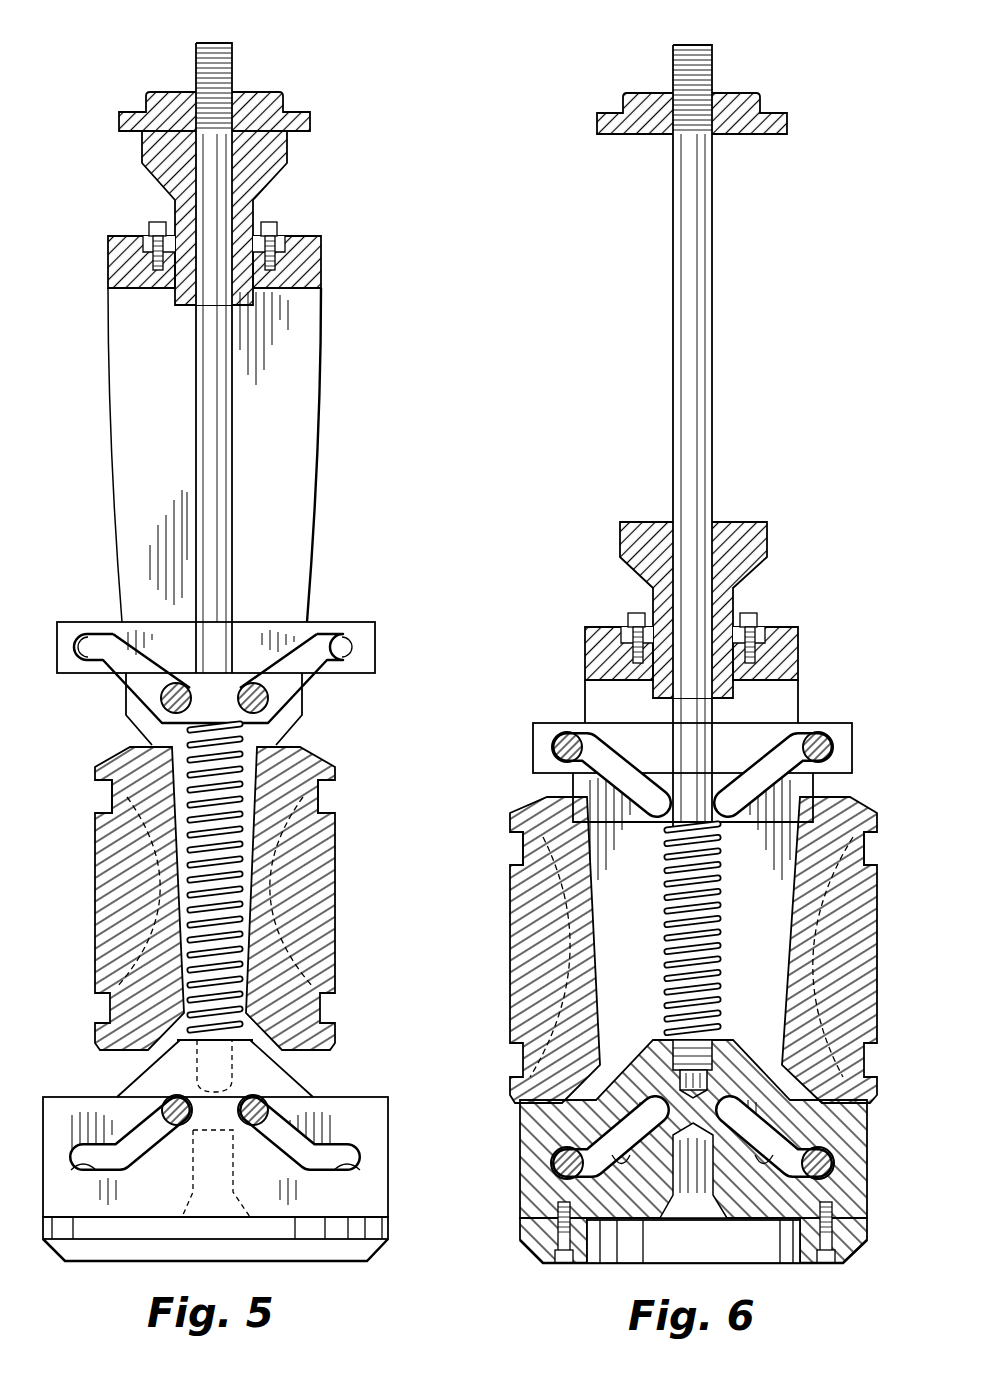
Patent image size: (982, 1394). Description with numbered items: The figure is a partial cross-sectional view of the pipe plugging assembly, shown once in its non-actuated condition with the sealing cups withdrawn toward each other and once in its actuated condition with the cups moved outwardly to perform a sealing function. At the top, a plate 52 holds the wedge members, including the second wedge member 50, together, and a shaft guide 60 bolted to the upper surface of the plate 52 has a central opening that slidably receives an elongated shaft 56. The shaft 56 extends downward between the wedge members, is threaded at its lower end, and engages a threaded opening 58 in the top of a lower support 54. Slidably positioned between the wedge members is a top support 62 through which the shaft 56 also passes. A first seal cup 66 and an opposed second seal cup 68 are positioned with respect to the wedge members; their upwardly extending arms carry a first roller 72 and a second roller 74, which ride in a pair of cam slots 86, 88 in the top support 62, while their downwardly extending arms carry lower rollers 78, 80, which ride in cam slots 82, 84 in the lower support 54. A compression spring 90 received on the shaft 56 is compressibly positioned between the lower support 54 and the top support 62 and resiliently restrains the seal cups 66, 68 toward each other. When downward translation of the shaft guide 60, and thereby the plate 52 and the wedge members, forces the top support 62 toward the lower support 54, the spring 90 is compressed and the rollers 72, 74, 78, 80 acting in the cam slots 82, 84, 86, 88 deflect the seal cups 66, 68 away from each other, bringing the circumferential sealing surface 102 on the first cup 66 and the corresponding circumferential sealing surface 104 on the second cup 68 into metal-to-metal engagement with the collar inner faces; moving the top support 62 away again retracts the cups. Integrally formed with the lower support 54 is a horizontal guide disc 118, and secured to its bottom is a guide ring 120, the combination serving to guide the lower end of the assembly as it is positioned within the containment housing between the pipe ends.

In FIG. 5, the second wedge member 50 is at (323, 377).
In FIG. 5, the plate 52 is at (320, 236).
In FIG. 6, the plate 52 is at (787, 637).
In FIG. 5, the lower support 54 is at (360, 1107).
In FIG. 6, the lower support 54 is at (837, 1132).
In FIG. 5, the elongated shaft 56 is at (227, 487).
In FIG. 6, the elongated shaft 56 is at (712, 282).
In FIG. 5, the threaded opening 58 is at (200, 1072).
In FIG. 6, the threaded opening 58 is at (690, 1047).
In FIG. 5, the shaft guide 60 is at (270, 156).
In FIG. 6, the shaft guide 60 is at (755, 523).
In FIG. 5, the top support 62 is at (240, 637).
In FIG. 6, the top support 62 is at (737, 730).
In FIG. 5, the first seal cup 66 is at (117, 935).
In FIG. 6, the first seal cup 66 is at (533, 953).
In FIG. 5, the second seal cup 68 is at (313, 893).
In FIG. 6, the second seal cup 68 is at (870, 957).
In FIG. 5, the first roller 72 is at (170, 700).
In FIG. 6, the first roller 72 is at (560, 738).
In FIG. 5, the second roller 74 is at (262, 700).
In FIG. 6, the second roller 74 is at (828, 732).
In FIG. 5, the lower roller 78 is at (185, 1122).
In FIG. 6, the lower roller 78 is at (552, 1163).
In FIG. 5, the lower roller 80 is at (267, 1098).
In FIG. 6, the lower roller 80 is at (837, 1180).
In FIG. 5, the cam slot 82 is at (83, 1167).
In FIG. 6, the cam slot 82 is at (620, 1160).
In FIG. 5, the cam slot 84 is at (353, 1168).
In FIG. 6, the cam slot 84 is at (772, 1160).
In FIG. 5, the cam slot 86 is at (75, 633).
In FIG. 6, the cam slot 86 is at (615, 750).
In FIG. 5, the cam slot 88 is at (342, 635).
In FIG. 6, the cam slot 88 is at (772, 748).
In FIG. 5, the compression spring 90 is at (190, 882).
In FIG. 6, the compression spring 90 is at (720, 917).
In FIG. 5, the circumferential sealing surface 102 is at (95, 770).
In FIG. 6, the circumferential sealing surface 102 is at (512, 816).
In FIG. 5, the circumferential sealing surface 104 is at (335, 772).
In FIG. 6, the circumferential sealing surface 104 is at (870, 816).
In FIG. 5, the guide disc 118 is at (390, 1203).
In FIG. 6, the guide disc 118 is at (522, 1203).
In FIG. 5, the guide ring 120 is at (270, 1230).
In FIG. 6, the guide ring 120 is at (542, 1258).